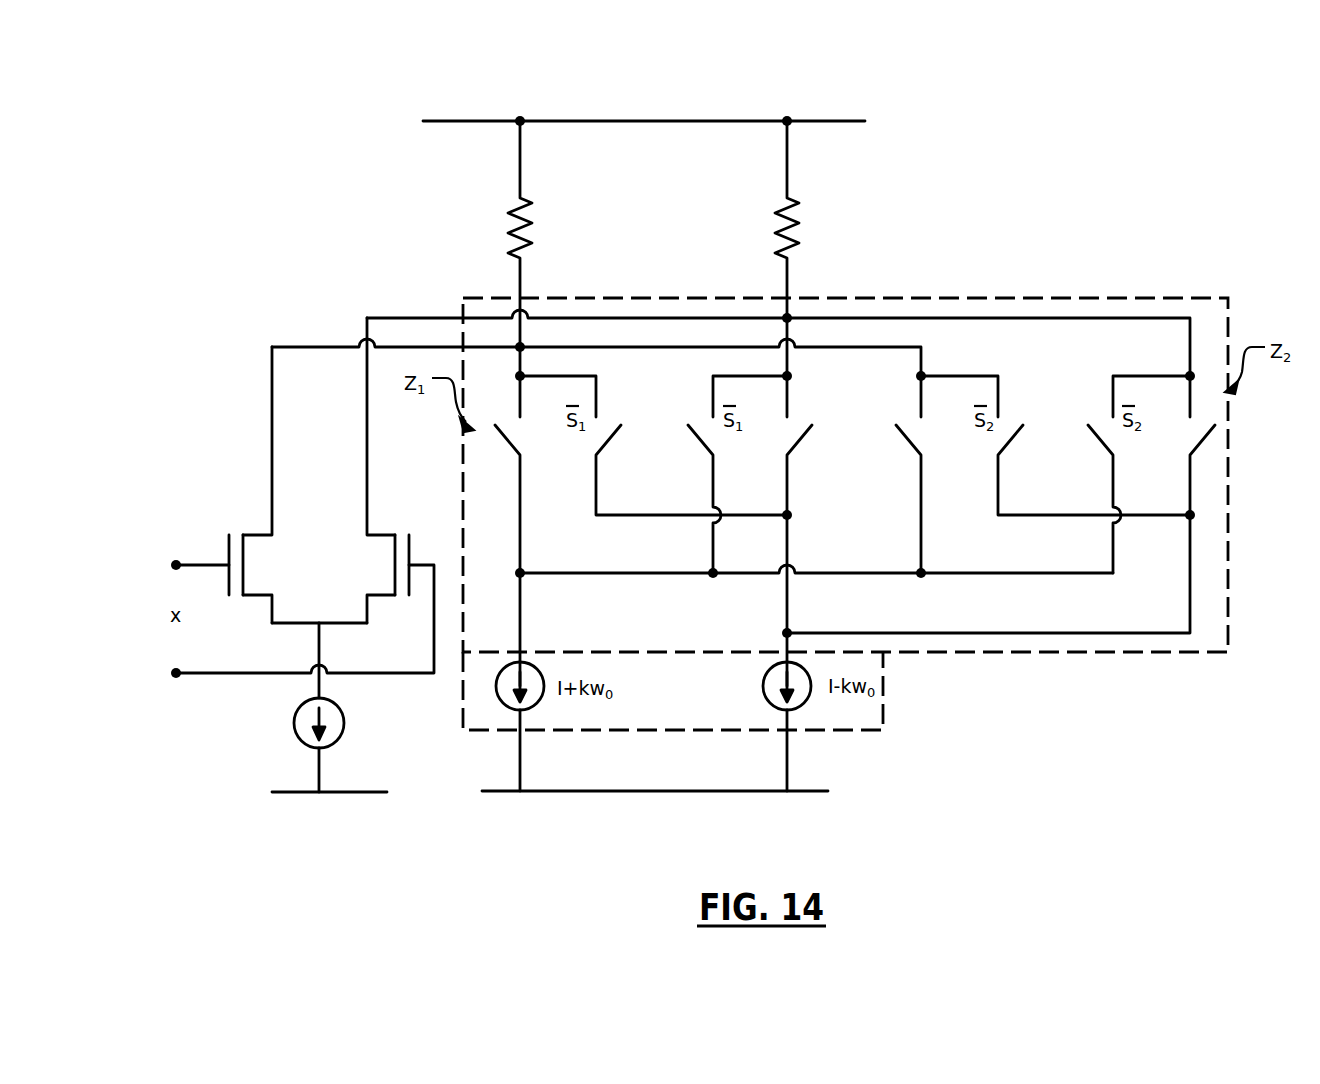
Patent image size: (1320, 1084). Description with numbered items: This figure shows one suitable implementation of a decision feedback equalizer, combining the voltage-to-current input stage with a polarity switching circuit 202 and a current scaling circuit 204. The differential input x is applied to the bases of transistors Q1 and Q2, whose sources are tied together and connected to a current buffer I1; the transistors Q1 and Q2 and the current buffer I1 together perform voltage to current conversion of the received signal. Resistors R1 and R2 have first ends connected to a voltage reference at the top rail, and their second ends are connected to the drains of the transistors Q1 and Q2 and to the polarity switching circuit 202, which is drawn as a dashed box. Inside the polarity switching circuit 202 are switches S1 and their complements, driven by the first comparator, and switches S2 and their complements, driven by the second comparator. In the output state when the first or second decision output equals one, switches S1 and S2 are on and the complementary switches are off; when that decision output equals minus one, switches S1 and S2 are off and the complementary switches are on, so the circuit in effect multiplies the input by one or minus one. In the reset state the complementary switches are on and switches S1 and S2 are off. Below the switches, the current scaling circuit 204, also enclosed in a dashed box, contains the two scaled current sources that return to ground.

The polarity switching circuit 202 is at (1057, 298).
The current scaling circuit 204 is at (883, 712).
The resistor R1 is at (536, 248).
The resistor R2 is at (770, 248).
The transistor Q1 is at (224, 579).
The transistor Q2 is at (305, 604).
The current buffer I1 is at (334, 723).
The switch S1 is at (656, 555).
The switch S2 is at (1005, 529).